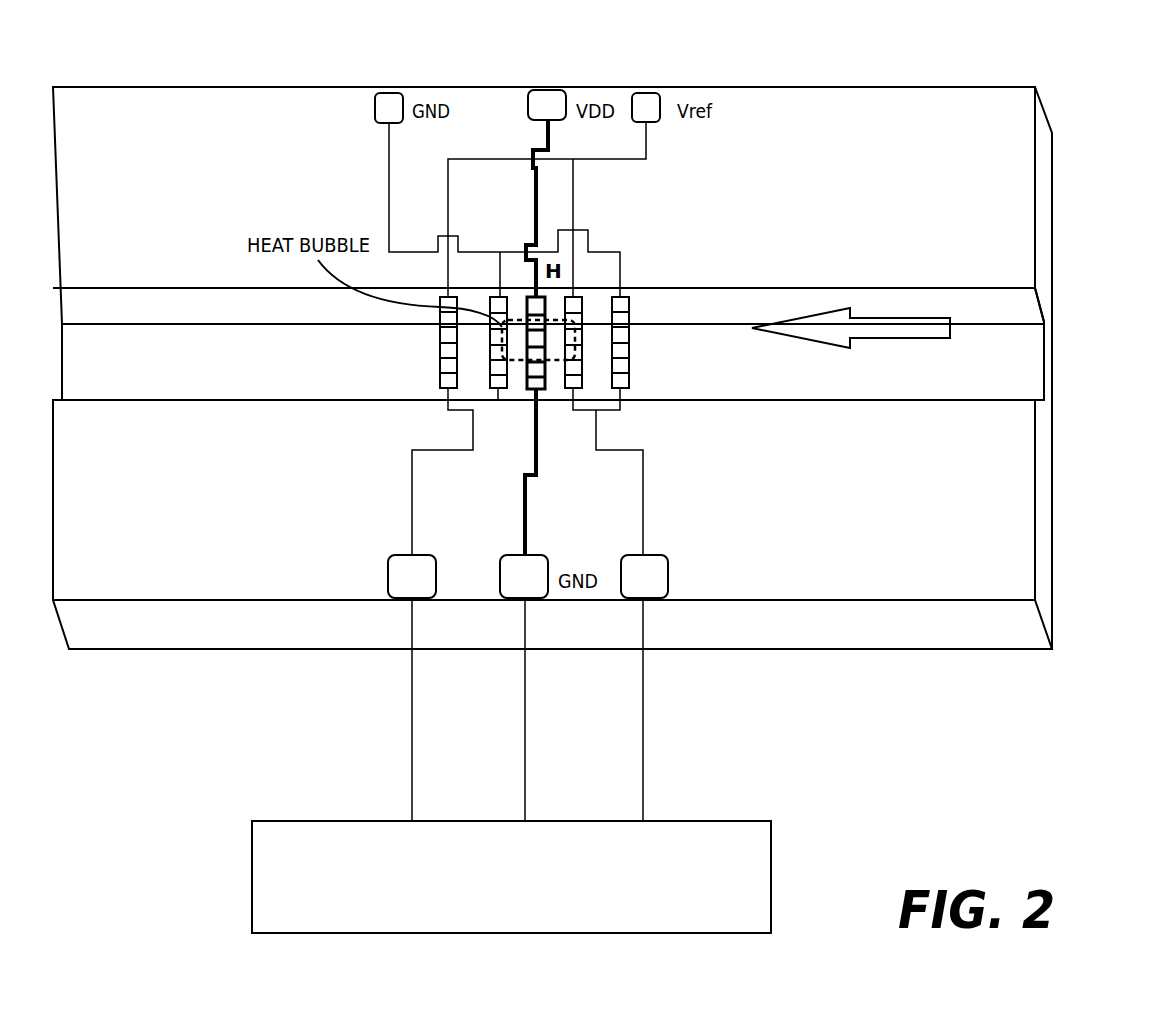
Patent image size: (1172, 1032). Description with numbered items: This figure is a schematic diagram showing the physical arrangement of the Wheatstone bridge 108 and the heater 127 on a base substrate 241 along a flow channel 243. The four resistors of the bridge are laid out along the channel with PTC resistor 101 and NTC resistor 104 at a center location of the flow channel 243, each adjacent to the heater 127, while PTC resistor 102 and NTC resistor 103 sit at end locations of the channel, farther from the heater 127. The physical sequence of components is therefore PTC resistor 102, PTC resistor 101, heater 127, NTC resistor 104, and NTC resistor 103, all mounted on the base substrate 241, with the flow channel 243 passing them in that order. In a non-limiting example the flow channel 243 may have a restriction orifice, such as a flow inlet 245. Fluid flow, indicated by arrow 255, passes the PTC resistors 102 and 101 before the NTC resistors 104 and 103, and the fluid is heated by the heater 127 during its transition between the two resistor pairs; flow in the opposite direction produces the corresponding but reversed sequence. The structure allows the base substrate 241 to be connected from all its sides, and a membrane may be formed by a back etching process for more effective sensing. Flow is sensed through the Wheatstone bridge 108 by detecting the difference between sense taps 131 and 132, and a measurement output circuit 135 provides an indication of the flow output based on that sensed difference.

The Wheatstone bridge 108 is at (249, 53).
The base substrate 241 is at (822, 226).
The flow channel 243 is at (361, 364).
The flow inlet 245 is at (1028, 358).
The arrow 255 is at (897, 338).
The NTC resistor 103 is at (439, 374).
The sense tap 132 is at (386, 577).
The NTC resistor 104 is at (490, 374).
The heater 127 is at (527, 385).
The PTC resistor 101 is at (567, 375).
The sense tap 131 is at (668, 578).
The PTC resistor 102 is at (628, 358).
The measurement output circuit 135 is at (525, 902).